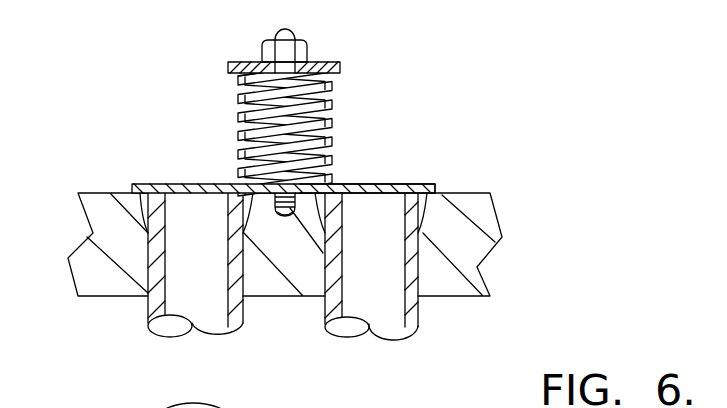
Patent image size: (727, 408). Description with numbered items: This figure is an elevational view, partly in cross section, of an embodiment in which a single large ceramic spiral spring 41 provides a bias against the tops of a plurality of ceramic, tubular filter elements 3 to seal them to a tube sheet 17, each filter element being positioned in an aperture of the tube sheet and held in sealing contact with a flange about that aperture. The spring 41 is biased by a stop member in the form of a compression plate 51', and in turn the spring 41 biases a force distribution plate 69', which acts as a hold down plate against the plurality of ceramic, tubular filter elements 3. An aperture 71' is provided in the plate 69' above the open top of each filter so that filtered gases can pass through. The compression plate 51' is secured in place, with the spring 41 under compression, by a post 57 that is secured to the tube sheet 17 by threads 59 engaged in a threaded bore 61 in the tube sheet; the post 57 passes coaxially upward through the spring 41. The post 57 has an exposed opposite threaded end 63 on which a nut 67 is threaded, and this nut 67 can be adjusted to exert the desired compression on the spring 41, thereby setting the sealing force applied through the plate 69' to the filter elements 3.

The tube sheet 17 is at (80, 194).
The ceramic tubular filter elements 3 is at (323, 332).
The ceramic spiral spring 41 is at (333, 120).
The post 57 is at (238, 79).
The force distribution plate 69' is at (263, 161).
The aperture 71' is at (371, 165).
The compression plate 51' is at (320, 59).
The nut 67 is at (316, 43).
The threaded end 63 is at (274, 31).
The threads 59 is at (281, 210).
The threaded bore 61 is at (272, 219).